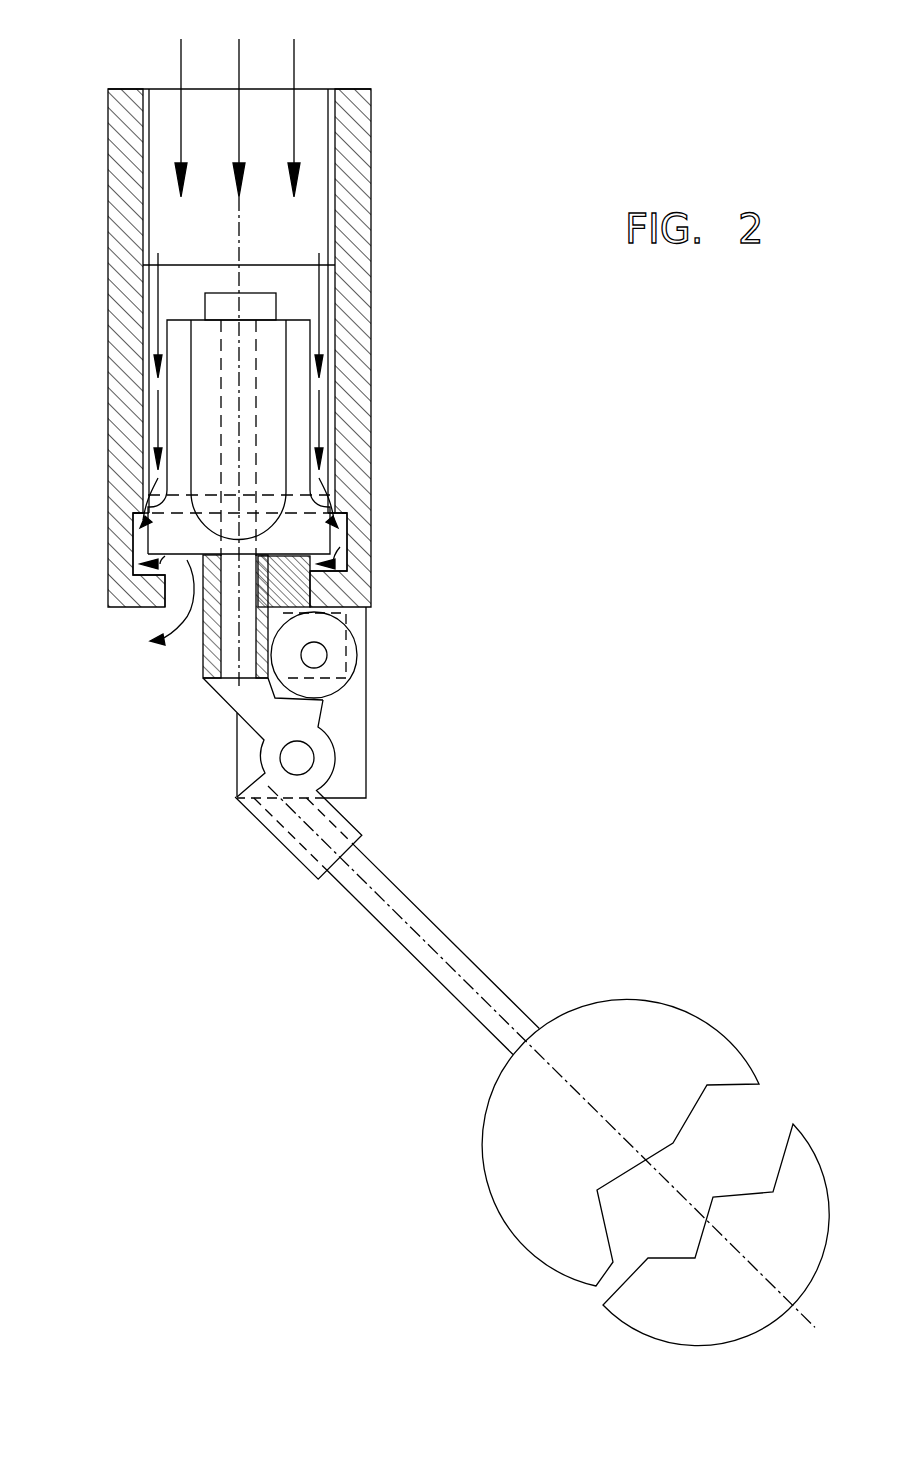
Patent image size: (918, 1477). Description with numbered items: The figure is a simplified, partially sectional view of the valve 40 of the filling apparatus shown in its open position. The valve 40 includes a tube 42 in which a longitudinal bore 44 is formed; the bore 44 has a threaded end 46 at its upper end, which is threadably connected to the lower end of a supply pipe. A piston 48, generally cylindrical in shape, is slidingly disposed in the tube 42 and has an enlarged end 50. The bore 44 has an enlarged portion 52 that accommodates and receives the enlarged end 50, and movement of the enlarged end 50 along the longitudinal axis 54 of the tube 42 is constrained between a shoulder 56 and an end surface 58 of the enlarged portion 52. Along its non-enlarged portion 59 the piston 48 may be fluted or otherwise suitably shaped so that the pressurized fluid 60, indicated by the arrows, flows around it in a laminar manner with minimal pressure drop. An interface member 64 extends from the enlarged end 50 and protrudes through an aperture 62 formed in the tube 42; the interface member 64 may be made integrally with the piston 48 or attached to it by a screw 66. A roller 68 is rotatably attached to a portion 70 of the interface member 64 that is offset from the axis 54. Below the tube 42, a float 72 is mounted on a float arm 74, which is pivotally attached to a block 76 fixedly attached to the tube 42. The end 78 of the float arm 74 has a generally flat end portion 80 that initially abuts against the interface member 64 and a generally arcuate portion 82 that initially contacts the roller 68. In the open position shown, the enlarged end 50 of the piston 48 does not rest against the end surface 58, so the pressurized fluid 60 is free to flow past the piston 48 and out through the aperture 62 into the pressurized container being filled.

The valve 40 is at (381, 152).
The tube 42 is at (372, 262).
The longitudinal bore 44 is at (167, 100).
The threaded end 46 is at (328, 107).
The piston 48 is at (299, 392).
The enlarged end 50 is at (323, 527).
The enlarged portion 52 is at (137, 548).
The longitudinal axis 54 is at (240, 234).
The shoulder 56 is at (142, 512).
The end surface 58 is at (340, 560).
The non-enlarged portion 59 is at (205, 423).
The pressurized fluid 60 is at (241, 57).
The aperture 62 is at (175, 592).
The interface member 64 is at (205, 667).
The screw 66 is at (205, 313).
The roller 68 is at (357, 653).
The portion 70 is at (346, 613).
The float 72 is at (603, 1000).
The float arm 74 is at (410, 907).
The block 76 is at (357, 760).
The end 78 is at (330, 722).
The flat end portion 80 is at (227, 687).
The arcuate portion 82 is at (337, 693).